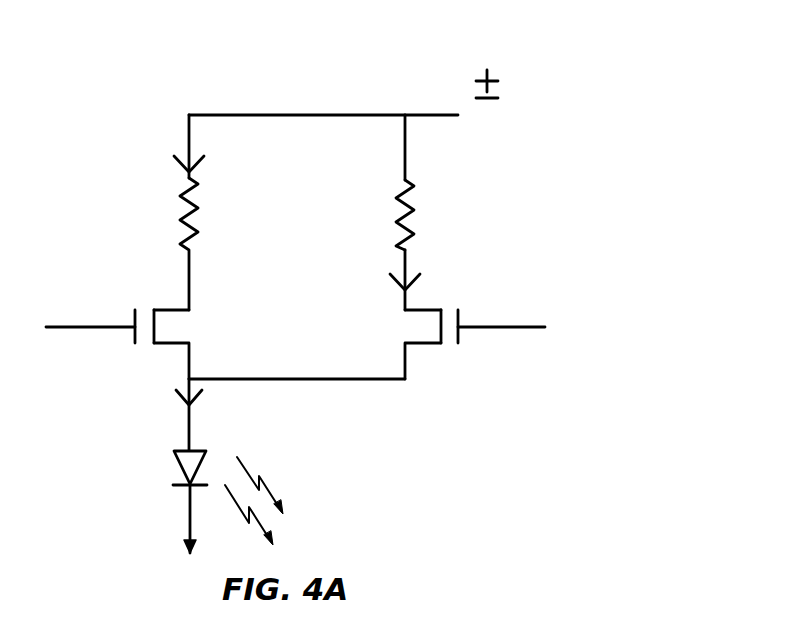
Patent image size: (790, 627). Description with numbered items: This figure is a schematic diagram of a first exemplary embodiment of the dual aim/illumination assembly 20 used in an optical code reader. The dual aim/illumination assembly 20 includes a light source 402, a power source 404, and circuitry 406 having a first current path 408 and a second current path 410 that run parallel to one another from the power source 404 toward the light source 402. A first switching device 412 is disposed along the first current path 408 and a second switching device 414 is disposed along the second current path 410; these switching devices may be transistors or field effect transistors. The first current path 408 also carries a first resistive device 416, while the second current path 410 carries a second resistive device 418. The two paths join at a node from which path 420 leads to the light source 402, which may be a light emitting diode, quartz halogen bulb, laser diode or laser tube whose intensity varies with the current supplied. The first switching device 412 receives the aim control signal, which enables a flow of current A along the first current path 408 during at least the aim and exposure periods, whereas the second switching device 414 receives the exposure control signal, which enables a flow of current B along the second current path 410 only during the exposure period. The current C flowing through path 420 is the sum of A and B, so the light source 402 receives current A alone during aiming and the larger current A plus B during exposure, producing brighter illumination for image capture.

The dual aim/illumination assembly 20 is at (314, 75).
The light source 402 is at (197, 448).
The power source 404 is at (462, 72).
The circuitry 406 is at (515, 255).
The first current path 408 is at (188, 147).
The second current path 410 is at (406, 168).
The first switching device 412 is at (147, 344).
The second switching device 414 is at (448, 347).
The first resistive device 416 is at (183, 211).
The second resistive device 418 is at (398, 222).
The path 420 is at (190, 416).